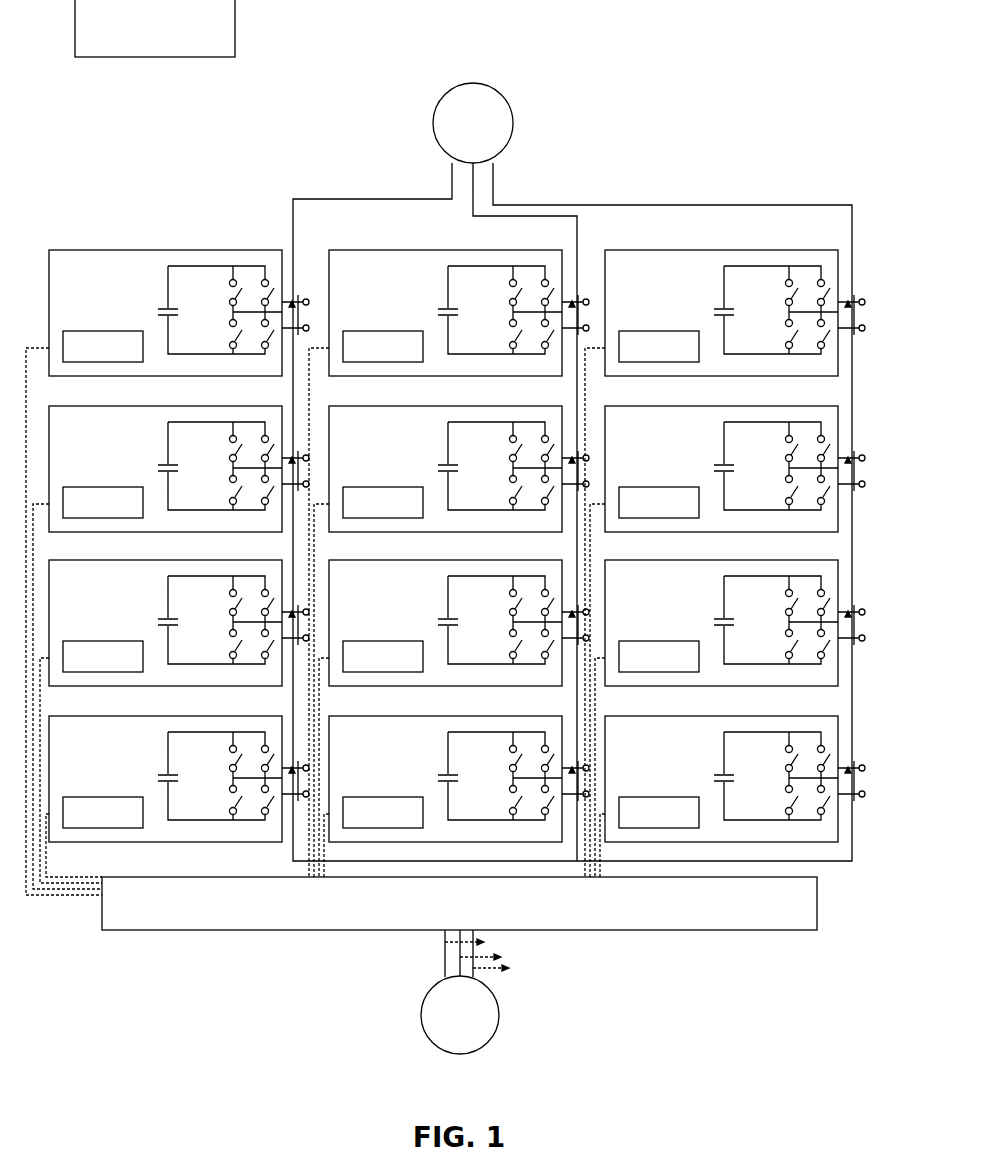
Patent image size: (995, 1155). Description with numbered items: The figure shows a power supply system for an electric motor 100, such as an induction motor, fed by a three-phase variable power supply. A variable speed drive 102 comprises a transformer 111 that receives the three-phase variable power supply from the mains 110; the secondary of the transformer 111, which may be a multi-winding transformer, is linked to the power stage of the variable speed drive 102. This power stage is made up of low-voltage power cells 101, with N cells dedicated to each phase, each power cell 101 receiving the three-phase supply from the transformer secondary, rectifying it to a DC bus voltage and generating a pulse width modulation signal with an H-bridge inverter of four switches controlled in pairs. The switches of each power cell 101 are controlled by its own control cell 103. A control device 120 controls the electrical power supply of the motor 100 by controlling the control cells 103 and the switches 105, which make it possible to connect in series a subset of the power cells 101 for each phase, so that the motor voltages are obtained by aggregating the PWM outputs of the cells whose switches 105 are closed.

The electric motor 100 is at (473, 123).
The power cell 101 is at (453, 546).
The variable speed drive 102 is at (207, 231).
The control cell 103 is at (381, 579).
The switches 105 is at (859, 793).
The mains 110 is at (489, 992).
The transformer 111 is at (459, 903).
The control device 120 is at (155, 28).